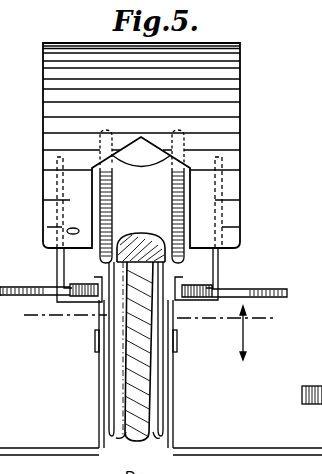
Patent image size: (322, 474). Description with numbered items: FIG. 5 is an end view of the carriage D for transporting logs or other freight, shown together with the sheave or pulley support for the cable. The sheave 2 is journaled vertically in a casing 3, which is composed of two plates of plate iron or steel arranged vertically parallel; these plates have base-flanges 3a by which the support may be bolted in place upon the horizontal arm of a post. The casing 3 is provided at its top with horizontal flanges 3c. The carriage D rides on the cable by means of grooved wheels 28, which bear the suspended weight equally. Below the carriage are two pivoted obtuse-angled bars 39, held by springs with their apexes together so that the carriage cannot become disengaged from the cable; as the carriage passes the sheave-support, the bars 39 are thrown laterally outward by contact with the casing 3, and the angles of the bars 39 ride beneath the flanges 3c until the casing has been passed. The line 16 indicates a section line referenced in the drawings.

The carriage D is at (141, 140).
The wheels 28 is at (141, 208).
The sheave 2 is at (141, 440).
The casing 3 is at (173, 397).
The base-flanges 3a is at (42, 443).
The horizontal flanges 3c is at (100, 280).
The obtuse-angled bars 39 is at (24, 287).
The reference line 16 is at (150, 333).